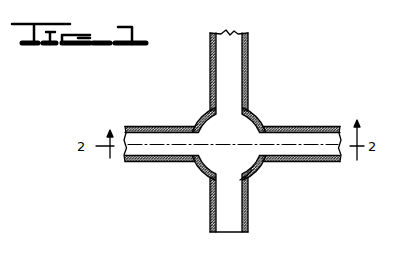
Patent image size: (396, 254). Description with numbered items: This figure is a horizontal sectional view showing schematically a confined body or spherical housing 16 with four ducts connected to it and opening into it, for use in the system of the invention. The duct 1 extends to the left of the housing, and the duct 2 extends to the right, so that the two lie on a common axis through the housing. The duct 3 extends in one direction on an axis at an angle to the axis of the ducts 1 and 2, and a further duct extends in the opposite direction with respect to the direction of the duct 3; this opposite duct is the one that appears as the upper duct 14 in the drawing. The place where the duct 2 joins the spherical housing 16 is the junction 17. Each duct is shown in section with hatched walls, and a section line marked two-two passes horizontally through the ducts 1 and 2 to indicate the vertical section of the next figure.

The duct 1 is at (168, 150).
The duct 2 is at (293, 131).
The duct 3 is at (215, 202).
The upper tube 14 is at (233, 69).
The spherical housing 16 is at (258, 117).
The junction of duct 2 with the spherical housing 17 is at (264, 163).